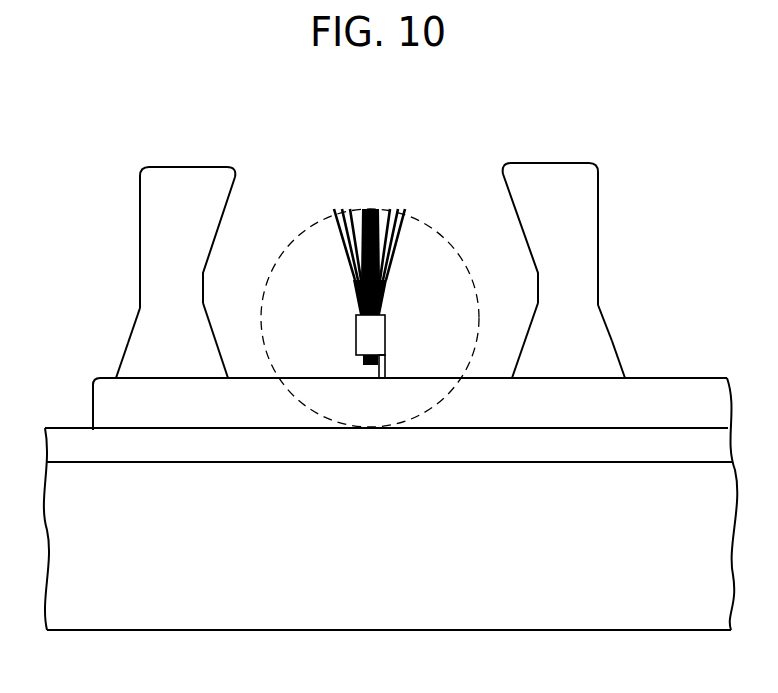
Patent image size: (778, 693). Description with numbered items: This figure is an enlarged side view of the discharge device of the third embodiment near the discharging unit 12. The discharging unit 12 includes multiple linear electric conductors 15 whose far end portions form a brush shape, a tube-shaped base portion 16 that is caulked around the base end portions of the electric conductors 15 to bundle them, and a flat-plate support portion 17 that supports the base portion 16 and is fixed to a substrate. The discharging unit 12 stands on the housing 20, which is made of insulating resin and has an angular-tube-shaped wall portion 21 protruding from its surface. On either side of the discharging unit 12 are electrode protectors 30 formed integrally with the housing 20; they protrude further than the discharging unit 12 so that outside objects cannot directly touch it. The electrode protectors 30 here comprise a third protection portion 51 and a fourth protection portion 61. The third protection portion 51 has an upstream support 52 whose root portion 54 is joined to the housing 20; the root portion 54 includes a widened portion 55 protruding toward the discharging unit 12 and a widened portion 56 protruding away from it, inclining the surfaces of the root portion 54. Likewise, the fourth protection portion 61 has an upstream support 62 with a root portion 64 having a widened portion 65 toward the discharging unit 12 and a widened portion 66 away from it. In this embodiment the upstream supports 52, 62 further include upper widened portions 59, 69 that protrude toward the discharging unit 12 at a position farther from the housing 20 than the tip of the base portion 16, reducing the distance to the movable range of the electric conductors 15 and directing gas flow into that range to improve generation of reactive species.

The discharging unit 12 is at (370, 276).
The electric conductors 15 is at (347, 267).
The base portion 16 is at (367, 332).
The support portion 17 is at (386, 375).
The housing 20 is at (307, 608).
The wall portion 21 is at (112, 404).
The electrode protector 30 is at (370, 216).
The third protection portion 51 is at (150, 230).
The upstream support 52 is at (155, 219).
The root portion 54 is at (170, 347).
The widened portion 55 is at (210, 363).
The widened portion 56 is at (132, 363).
The upper widened portion 59 is at (212, 184).
The fourth protection portion 61 is at (591, 229).
The upstream support 62 is at (583, 214).
The root portion 64 is at (568, 345).
The widened portion 65 is at (530, 360).
The widened portion 66 is at (608, 361).
The upper widened portion 69 is at (522, 183).